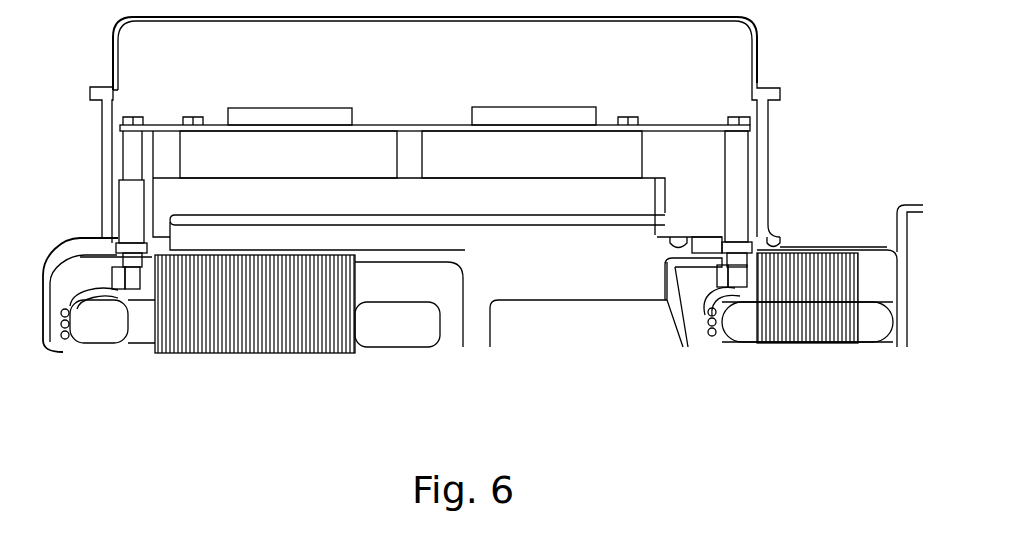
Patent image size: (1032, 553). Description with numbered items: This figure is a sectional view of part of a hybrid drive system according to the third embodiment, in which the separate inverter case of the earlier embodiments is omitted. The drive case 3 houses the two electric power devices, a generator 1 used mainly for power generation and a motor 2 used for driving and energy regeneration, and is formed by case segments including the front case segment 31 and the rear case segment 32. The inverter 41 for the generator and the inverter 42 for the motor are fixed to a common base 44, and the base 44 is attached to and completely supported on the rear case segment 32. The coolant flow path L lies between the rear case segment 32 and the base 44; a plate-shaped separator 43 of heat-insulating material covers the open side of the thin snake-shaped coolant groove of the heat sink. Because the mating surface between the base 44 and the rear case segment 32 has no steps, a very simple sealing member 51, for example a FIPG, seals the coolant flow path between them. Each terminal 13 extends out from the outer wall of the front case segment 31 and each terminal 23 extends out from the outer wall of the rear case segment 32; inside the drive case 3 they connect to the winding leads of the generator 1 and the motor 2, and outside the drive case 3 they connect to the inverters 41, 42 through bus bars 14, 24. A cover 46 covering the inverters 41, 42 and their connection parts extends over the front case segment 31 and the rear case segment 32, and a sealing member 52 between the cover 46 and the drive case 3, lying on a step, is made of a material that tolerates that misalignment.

The generator 1 is at (805, 354).
The motor 2 is at (253, 366).
The drive case 3 is at (860, 238).
The terminal 13 is at (768, 162).
The bus bar 14 is at (690, 126).
The terminal 23 is at (130, 198).
The bus bar 24 is at (163, 126).
The front case segment 31 is at (842, 247).
The rear case segment 32 is at (553, 302).
The inverter 41 is at (443, 140).
The inverter 42 is at (371, 131).
The separator 43 is at (447, 220).
The base 44 is at (660, 183).
The cover 46 is at (757, 58).
The sealing member 51 is at (683, 237).
The sealing member 52 is at (781, 231).
The flow path L is at (578, 258).